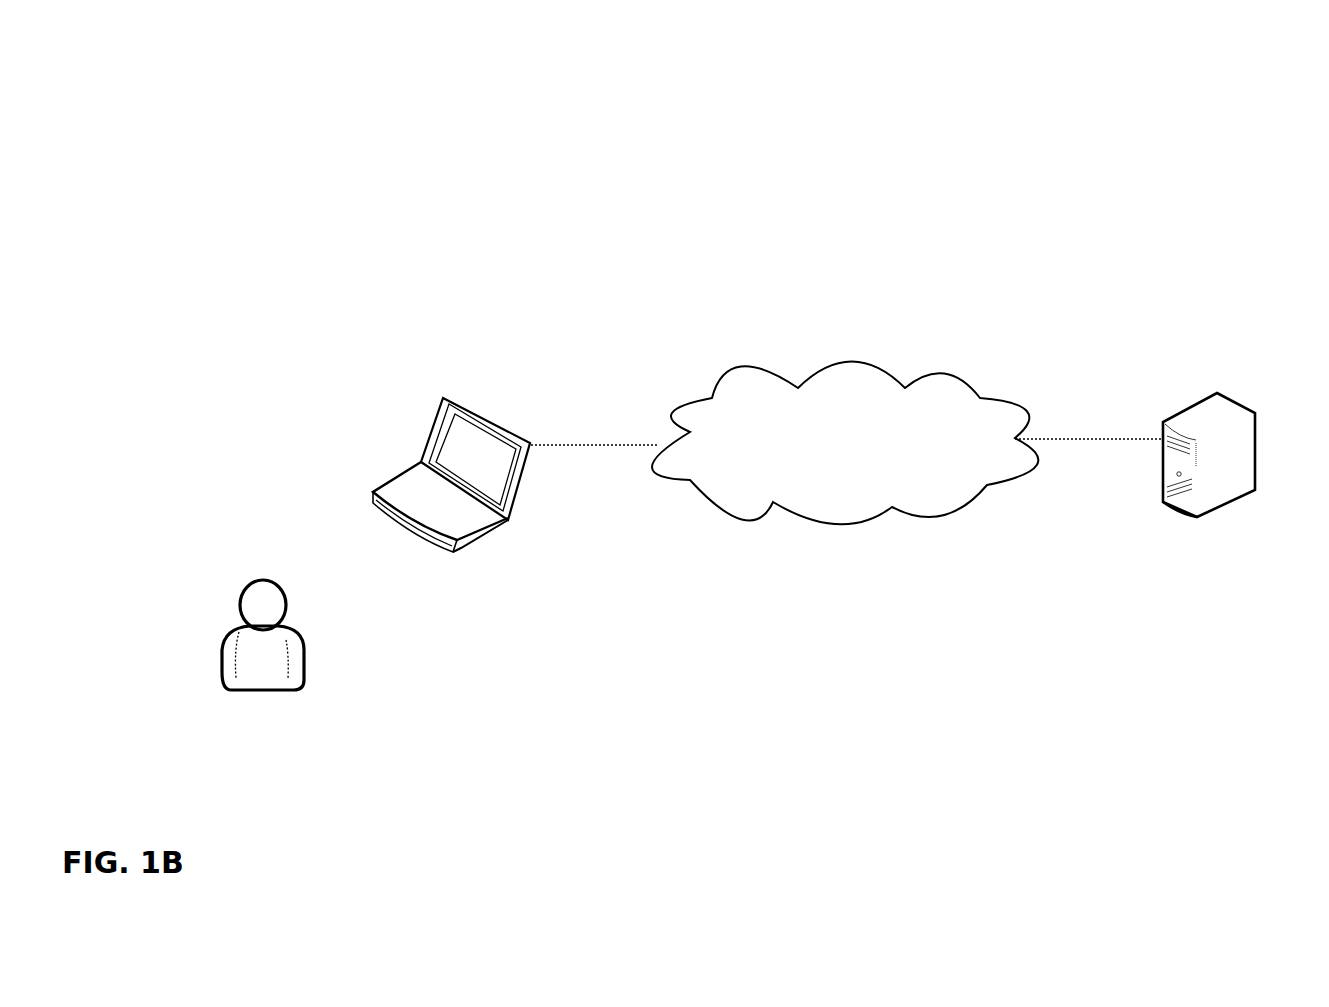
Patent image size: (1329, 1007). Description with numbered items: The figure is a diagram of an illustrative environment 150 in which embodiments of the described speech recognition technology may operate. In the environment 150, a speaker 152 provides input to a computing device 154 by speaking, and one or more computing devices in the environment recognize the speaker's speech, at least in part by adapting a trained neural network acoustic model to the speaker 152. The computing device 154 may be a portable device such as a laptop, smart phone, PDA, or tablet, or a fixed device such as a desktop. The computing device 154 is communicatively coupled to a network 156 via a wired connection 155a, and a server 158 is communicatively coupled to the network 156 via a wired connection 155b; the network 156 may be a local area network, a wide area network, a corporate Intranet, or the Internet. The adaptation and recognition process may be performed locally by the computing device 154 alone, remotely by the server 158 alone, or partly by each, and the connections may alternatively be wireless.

The illustrative environment 150 is at (1248, 75).
The speaker 152 is at (280, 583).
The computing device 154 is at (445, 395).
The wired connection 155a is at (570, 440).
The wired connection 155b is at (1063, 437).
The network 156 is at (955, 377).
The server 158 is at (1217, 393).